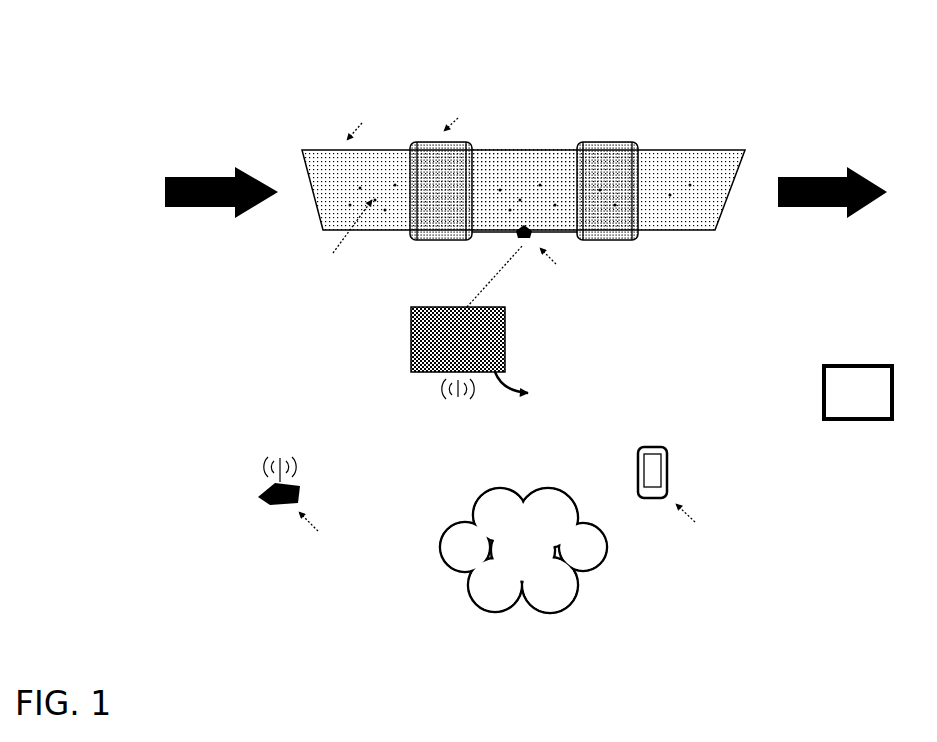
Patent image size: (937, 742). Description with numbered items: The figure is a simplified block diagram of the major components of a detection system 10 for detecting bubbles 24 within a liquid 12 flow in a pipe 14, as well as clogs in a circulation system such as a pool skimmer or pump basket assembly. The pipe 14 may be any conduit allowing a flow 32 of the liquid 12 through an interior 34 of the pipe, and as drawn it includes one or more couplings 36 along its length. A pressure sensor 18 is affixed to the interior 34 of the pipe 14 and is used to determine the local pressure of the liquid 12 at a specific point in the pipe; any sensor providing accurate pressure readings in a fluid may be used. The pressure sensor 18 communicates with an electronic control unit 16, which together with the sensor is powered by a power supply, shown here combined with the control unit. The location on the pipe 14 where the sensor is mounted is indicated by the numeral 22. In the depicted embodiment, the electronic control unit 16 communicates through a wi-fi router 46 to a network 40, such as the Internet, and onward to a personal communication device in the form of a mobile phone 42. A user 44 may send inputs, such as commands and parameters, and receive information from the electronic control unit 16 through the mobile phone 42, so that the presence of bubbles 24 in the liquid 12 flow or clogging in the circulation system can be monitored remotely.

The detection system 10 is at (727, 62).
The liquid 12 is at (320, 177).
The pipe 14 is at (547, 143).
The electronic control unit 16 is at (408, 337).
The pressure sensor 18 is at (528, 242).
The pipe wall section 22 is at (492, 236).
The bubbles 24 is at (358, 202).
The flow 32 is at (285, 177).
The interior 34 is at (676, 178).
The couplings 36 is at (433, 143).
The network 40 is at (591, 579).
The mobile phone 42 is at (668, 468).
The user 44 is at (822, 392).
The wi-fi router 46 is at (260, 497).